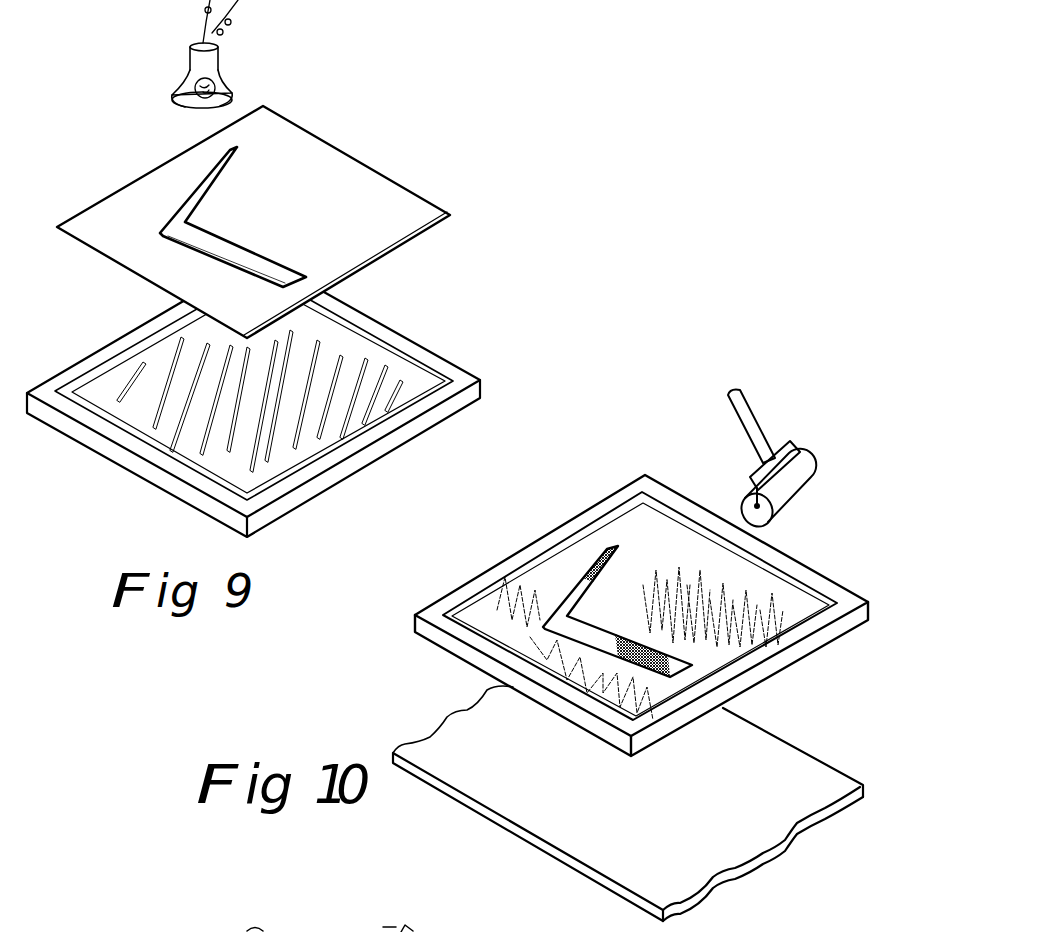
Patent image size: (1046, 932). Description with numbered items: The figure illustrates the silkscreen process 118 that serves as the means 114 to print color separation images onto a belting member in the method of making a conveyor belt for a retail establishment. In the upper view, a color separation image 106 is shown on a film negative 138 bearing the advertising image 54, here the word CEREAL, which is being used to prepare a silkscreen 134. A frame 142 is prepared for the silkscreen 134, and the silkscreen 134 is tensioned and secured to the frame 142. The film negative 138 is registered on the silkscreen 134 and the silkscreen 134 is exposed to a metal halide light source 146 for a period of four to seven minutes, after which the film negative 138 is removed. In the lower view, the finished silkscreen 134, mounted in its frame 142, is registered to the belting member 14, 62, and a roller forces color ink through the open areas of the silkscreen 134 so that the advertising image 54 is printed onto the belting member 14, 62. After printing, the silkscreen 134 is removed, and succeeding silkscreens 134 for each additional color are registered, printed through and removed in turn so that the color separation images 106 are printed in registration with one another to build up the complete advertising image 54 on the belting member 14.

In FIG. 10, the belting member 14 is at (775, 757).
In FIG. 9, the advertising image 54 is at (260, 192).
In FIG. 10, the advertising image 54 is at (620, 637).
In FIG. 10, the belting member 62 is at (820, 778).
In FIG. 9, the color separation image 106 is at (413, 230).
In FIG. 10, the means to print 114 is at (627, 520).
In FIG. 9, the silkscreen process 118 is at (563, 285).
In FIG. 10, the silkscreen process 118 is at (660, 453).
In FIG. 10, the silkscreen 134 is at (777, 592).
In FIG. 9, the film negative 138 is at (397, 197).
In FIG. 9, the frame 142 is at (428, 353).
In FIG. 9, the metal halide light source 146 is at (230, 85).